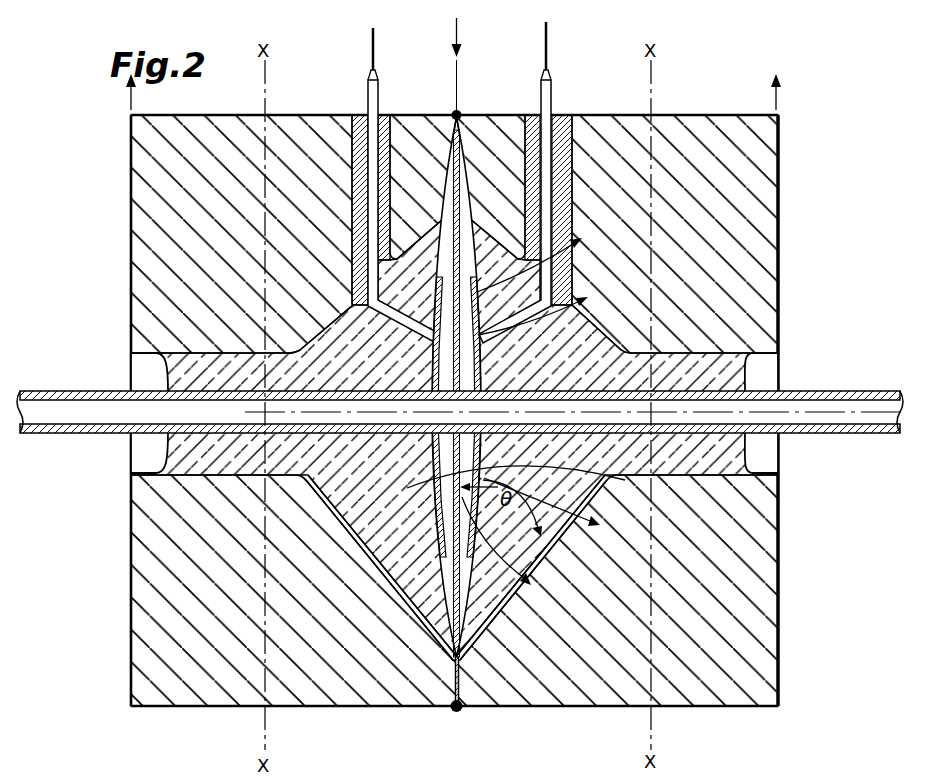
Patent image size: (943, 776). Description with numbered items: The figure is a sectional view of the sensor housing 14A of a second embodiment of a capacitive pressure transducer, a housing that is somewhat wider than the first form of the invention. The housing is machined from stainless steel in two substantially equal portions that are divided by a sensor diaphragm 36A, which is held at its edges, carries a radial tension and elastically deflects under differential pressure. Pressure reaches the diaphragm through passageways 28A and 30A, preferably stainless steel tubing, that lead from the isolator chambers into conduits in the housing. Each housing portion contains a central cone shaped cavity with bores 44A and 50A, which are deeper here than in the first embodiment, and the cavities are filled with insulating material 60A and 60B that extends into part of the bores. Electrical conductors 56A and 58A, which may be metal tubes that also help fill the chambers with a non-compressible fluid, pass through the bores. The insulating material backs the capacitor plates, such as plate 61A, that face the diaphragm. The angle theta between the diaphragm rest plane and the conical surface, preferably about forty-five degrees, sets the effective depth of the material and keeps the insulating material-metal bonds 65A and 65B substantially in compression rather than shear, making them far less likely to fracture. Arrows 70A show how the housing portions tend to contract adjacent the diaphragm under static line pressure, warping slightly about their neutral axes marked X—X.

The sensor housing 14A is at (343, 695).
The passageway 28A is at (300, 406).
The passageway 30A is at (815, 420).
The sensor diaphragm 36A is at (478, 350).
The bore 44A is at (143, 376).
The bore 50A is at (770, 378).
The electrical conductor 56A is at (368, 92).
The electrical conductor 58A is at (551, 92).
The insulating material 60A is at (370, 333).
The insulating material 60B is at (598, 343).
The capacitor plate 61A is at (436, 485).
The insulating material-metal interface 65A is at (402, 562).
The insulating material-metal interface 65B is at (522, 556).
The arrows 70A is at (477, 315).